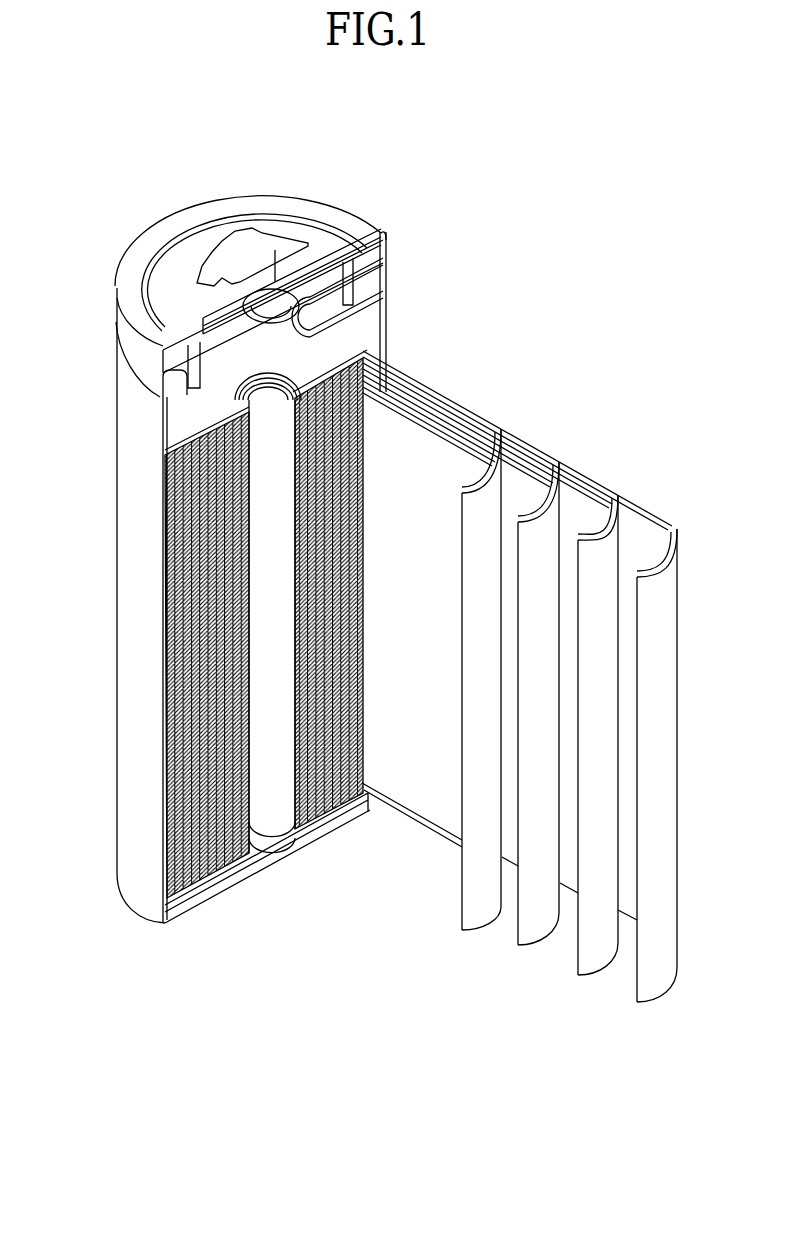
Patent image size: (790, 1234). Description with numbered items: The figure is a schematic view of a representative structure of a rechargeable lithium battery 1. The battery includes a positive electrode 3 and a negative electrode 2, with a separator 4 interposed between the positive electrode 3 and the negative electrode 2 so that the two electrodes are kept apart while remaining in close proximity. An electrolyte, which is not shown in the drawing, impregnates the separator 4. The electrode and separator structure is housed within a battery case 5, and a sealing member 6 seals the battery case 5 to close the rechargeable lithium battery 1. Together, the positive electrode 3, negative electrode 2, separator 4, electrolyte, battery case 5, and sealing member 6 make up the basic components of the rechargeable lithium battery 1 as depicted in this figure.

The rechargeable lithium battery 1 is at (269, 127).
The negative electrode 2 is at (657, 988).
The positive electrode 3 is at (538, 934).
The separator 4 is at (480, 913).
The battery case 5 is at (128, 550).
The sealing member 6 is at (336, 250).